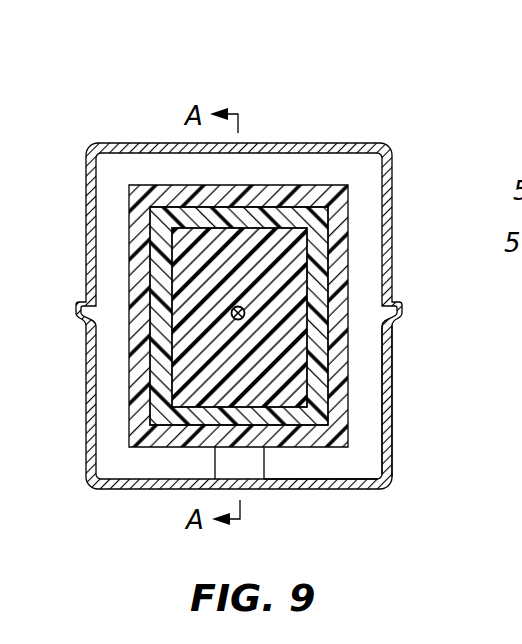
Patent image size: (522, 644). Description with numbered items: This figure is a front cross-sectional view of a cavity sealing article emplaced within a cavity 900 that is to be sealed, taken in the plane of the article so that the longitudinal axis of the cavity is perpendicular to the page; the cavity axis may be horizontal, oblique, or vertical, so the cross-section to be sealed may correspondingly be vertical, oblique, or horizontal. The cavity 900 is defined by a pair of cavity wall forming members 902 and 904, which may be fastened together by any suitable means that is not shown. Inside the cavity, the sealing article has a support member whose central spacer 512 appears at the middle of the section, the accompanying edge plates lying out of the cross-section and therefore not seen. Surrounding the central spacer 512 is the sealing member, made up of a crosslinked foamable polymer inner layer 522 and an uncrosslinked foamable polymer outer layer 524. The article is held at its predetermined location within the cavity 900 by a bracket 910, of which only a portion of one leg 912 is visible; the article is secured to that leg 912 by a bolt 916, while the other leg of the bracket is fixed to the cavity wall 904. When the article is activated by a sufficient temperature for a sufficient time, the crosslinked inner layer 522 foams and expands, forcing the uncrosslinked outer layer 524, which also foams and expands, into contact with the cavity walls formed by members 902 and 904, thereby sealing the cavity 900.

The cavity 900 is at (281, 278).
The cavity wall forming member 902 is at (297, 254).
The cavity wall forming member 904 is at (392, 411).
The uncrosslinked foamable polymer outer layer 524 is at (343, 227).
The crosslinked foamable polymer inner layer 522 is at (325, 275).
The central spacer 512 is at (266, 277).
The bolt 916 is at (243, 320).
The leg 912 is at (232, 465).
The bracket 910 is at (290, 462).